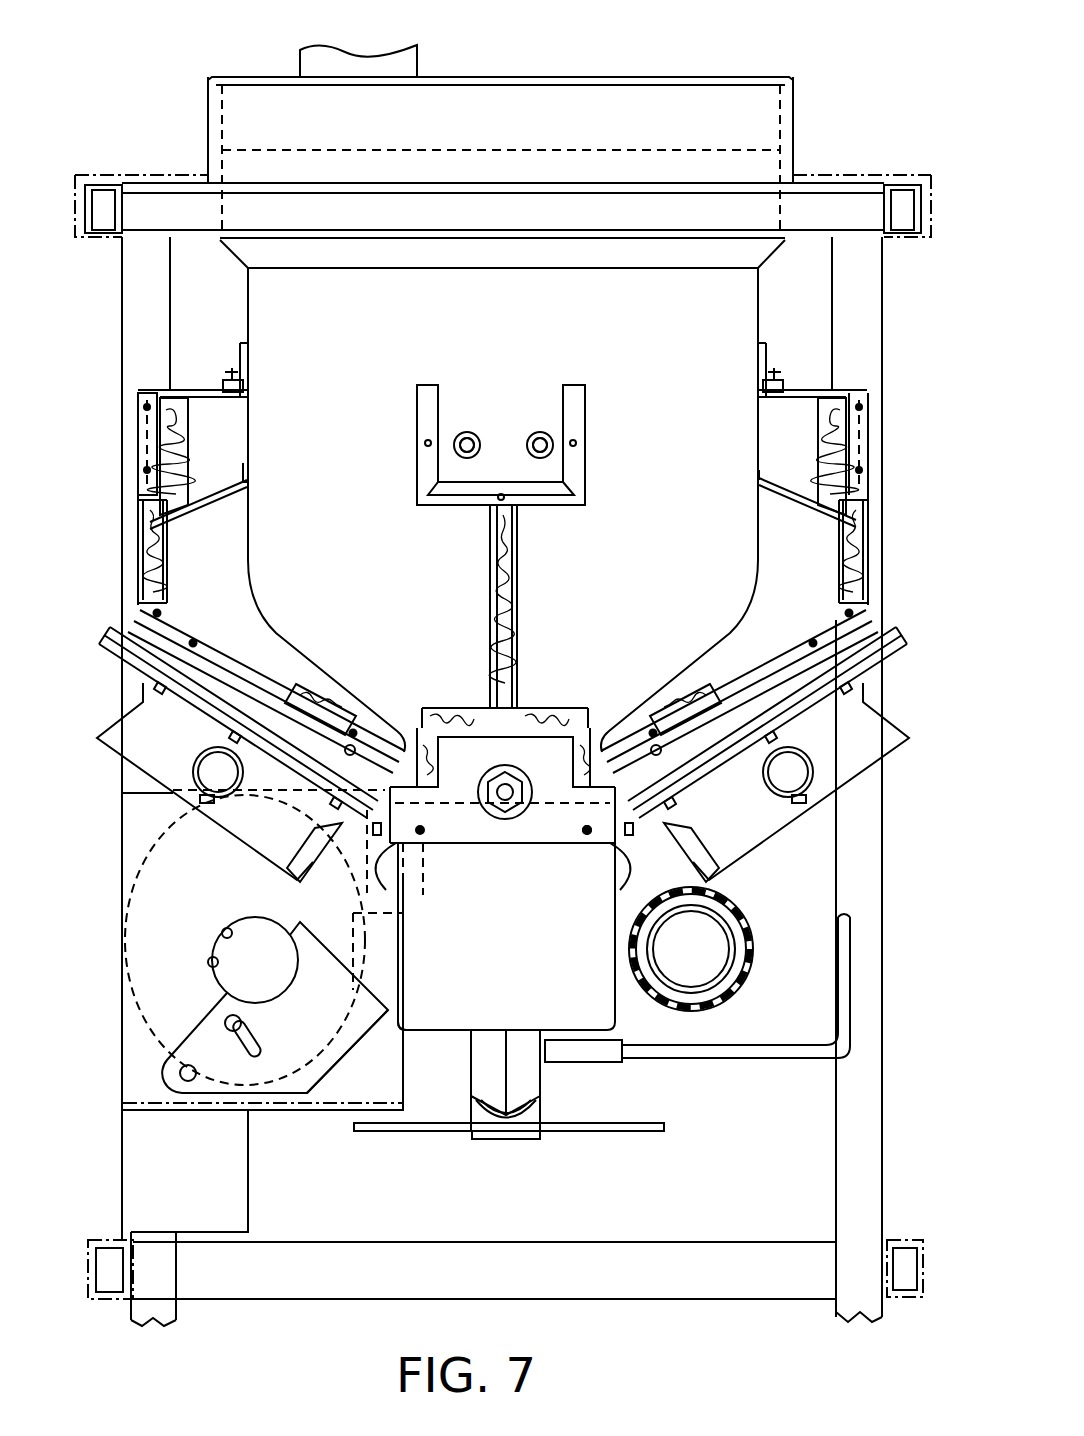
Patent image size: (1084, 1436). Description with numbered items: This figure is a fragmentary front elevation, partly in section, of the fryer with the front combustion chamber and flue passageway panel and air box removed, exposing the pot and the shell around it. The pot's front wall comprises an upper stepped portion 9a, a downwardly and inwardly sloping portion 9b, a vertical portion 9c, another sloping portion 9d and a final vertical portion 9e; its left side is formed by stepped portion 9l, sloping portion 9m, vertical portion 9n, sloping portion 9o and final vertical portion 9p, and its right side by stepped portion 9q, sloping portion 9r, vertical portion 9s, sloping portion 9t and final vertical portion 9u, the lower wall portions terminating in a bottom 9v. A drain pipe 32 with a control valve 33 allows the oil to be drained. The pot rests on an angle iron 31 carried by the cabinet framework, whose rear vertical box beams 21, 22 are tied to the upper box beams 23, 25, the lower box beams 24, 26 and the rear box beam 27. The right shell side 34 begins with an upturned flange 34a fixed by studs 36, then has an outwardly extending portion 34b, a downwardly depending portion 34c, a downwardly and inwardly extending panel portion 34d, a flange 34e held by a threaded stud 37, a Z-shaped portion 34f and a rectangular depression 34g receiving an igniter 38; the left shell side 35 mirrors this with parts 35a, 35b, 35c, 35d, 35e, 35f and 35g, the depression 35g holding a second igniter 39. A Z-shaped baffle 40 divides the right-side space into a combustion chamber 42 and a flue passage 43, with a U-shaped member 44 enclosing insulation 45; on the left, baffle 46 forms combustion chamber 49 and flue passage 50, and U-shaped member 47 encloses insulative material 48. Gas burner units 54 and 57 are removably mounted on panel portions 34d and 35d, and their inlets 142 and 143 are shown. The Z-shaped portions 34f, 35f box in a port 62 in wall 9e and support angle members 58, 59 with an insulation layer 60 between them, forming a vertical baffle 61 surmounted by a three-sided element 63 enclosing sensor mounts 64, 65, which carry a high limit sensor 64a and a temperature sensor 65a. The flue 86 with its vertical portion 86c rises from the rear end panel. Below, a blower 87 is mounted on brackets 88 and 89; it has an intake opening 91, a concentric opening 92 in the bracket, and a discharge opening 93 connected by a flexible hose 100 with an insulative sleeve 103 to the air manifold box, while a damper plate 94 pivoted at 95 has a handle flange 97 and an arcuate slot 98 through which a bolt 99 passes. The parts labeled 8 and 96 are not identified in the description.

The frame 8 is at (817, 175).
The upper stepped portion 9a is at (500, 156).
The downwardly and inwardly sloping portion 9b is at (463, 250).
The vertical portion 9c is at (605, 562).
The downwardly and inwardly sloping portion 9d is at (553, 663).
The final vertical portion 9e is at (502, 888).
The upper stepped portion 9l is at (206, 118).
The downwardly and inwardly sloping portion 9m is at (232, 252).
The vertical portion 9n is at (250, 297).
The downwardly and inwardly sloping portion 9o is at (290, 642).
The final vertical portion 9p is at (405, 965).
The stepped portion 9q is at (795, 100).
The downwardly and inwardly sloping portion 9r is at (770, 258).
The vertical portion 9s is at (760, 572).
The downwardly and inwardly sloping portion 9t is at (696, 655).
The final vertical portion 9u is at (613, 1005).
The bottom 9v is at (437, 1020).
The vertical box beam 21 is at (866, 300).
The vertical box beam 22 is at (130, 305).
The horizontal box beam 23 is at (898, 240).
The box beam 24 is at (893, 1240).
The box beam 25 is at (108, 240).
The box beam 26 is at (98, 1302).
The box beam 27 is at (433, 1270).
The angle iron 31 is at (460, 207).
The drain pipe 32 is at (545, 1102).
The control valve 33 is at (472, 1065).
The shell side 34 is at (868, 538).
The upturned flange 34a is at (773, 377).
The outwardly extending portion 34b is at (860, 388).
The downwardly depending portion 34c is at (870, 447).
The downwardly and inwardly extending panel portion 34d is at (793, 708).
The downwardly depending flange 34e is at (615, 886).
The Z-shaped portion 34f is at (585, 834).
The rectangular depression 34g is at (660, 696).
The shell side 35 is at (138, 548).
The upturned flange 35a is at (237, 380).
The outwardly extending portion 35b is at (147, 388).
The downwardly depending portion 35c is at (138, 447).
The downwardly and inwardly extending panel portion 35d is at (127, 652).
The downwardly depending flange 35e is at (385, 888).
The Z-shaped portion 35f is at (450, 750).
The rectangular depression 35g is at (330, 688).
The studs 36 is at (228, 375).
The threaded stud 37 is at (380, 848).
The igniter 38 is at (672, 779).
The second igniter 39 is at (297, 770).
The Z-shaped baffle 40 is at (783, 505).
The combustion chamber 42 is at (736, 671).
The flue passage 43 is at (786, 420).
The U-shaped sheet metal member 44 is at (813, 447).
The insulation 45 is at (840, 415).
The longitudinal baffle 46 is at (187, 515).
The U-shaped sheet metal member 47 is at (190, 432).
The insulative material 48 is at (140, 418).
The combustion chamber 49 is at (235, 600).
The flue passage 50 is at (222, 455).
The gas burner unit 54 is at (872, 762).
The gas burner unit 57 is at (150, 752).
The angle member 58 is at (520, 588).
The angle member 59 is at (490, 592).
The insulation layer 60 is at (507, 545).
The vertical baffle 61 is at (518, 632).
The port 62 is at (537, 817).
The three-sided element 63 is at (587, 420).
The sensor mount 64 is at (457, 432).
The high limit sensor 64a is at (473, 452).
The sensor mount 65 is at (545, 432).
The sensor 65a is at (548, 452).
The flue 86 is at (420, 57).
The vertical portion 86c is at (308, 57).
The blower 87 is at (135, 888).
The bracket element 88 is at (150, 820).
The bracket element 89 is at (160, 1157).
The intake opening 91 is at (225, 930).
The opening 92 is at (208, 960).
The discharge opening 93 is at (425, 870).
The damper plate 94 is at (275, 1007).
The pivot 95 is at (180, 1073).
The hub 96 is at (298, 982).
The forwardly extending flange 97 is at (332, 1068).
The arcuate slot 98 is at (258, 1042).
The bolt 99 is at (225, 1020).
The flexible hose 100 is at (700, 985).
The insulative sleeve 103 is at (734, 983).
The inlet 142 is at (800, 752).
The inlet 143 is at (208, 747).